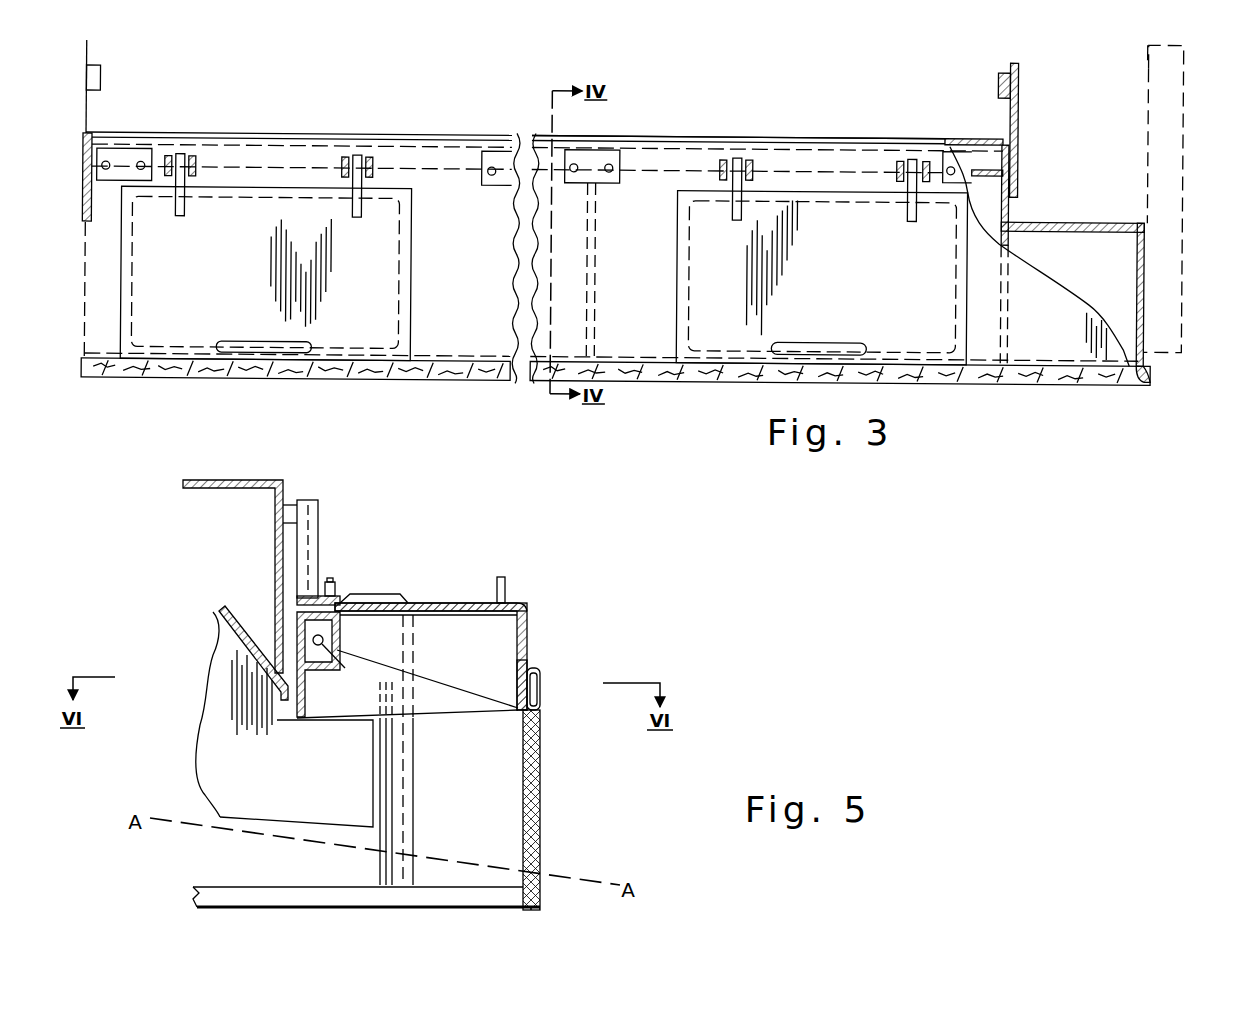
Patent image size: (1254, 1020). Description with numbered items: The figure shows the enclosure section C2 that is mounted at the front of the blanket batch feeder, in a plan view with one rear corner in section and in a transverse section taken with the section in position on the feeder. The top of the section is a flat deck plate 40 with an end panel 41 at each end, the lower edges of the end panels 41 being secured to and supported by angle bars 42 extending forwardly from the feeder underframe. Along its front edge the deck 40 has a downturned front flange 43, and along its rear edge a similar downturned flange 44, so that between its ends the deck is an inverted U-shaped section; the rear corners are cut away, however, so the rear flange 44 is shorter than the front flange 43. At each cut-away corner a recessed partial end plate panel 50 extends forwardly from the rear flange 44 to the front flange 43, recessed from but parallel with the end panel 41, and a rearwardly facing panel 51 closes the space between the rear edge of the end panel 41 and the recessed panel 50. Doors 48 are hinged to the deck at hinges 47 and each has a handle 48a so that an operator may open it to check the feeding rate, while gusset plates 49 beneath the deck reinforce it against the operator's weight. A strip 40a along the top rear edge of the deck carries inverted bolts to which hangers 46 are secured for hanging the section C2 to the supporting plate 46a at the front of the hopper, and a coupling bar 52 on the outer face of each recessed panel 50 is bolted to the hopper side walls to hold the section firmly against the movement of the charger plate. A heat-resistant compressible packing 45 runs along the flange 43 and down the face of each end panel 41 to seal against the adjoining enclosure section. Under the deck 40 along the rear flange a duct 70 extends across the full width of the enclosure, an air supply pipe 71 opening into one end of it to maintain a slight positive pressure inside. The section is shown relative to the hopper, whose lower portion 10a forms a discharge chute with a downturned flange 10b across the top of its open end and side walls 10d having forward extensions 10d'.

In FIG. 3, the coupling bar 52 is at (88, 108).
In FIG. 3, the hinges 47 is at (342, 158).
In FIG. 3, the strip 40a is at (678, 153).
In FIG. 5, the strip 40a is at (340, 600).
In FIG. 3, the door 48 is at (355, 270).
In FIG. 5, the door 48 is at (443, 603).
In FIG. 3, the handle 48a is at (249, 338).
In FIG. 3, the recessed partial end plate panel 50 is at (1010, 206).
In FIG. 5, the recessed partial end plate panel 50 is at (465, 720).
In FIG. 3, the rearwardly facing panel 51 is at (1095, 214).
In FIG. 5, the rearwardly facing panel 51 is at (412, 835).
In FIG. 3, the angle bar 42 is at (1185, 149).
In FIG. 5, the angle bar 42 is at (423, 893).
In FIG. 3, the end panel 41 is at (1146, 297).
In FIG. 5, the end panel 41 is at (495, 827).
In FIG. 5, the supporting plate 46a is at (275, 540).
In FIG. 5, the hanger 46 is at (310, 540).
In FIG. 5, the lower portion of hopper 10a is at (205, 646).
In FIG. 5, the downturned flange 10b is at (237, 628).
In FIG. 5, the side wall 10d is at (248, 761).
In FIG. 5, the forward extension 10d' is at (328, 775).
In FIG. 5, the duct 70 is at (340, 636).
In FIG. 5, the air supply pipe 71 is at (346, 663).
In FIG. 5, the downturned rear flange 44 is at (305, 698).
In FIG. 5, the gusset plate 49 is at (460, 670).
In FIG. 5, the deck plate 40 is at (487, 617).
In FIG. 5, the downturned front flange 43 is at (527, 668).
In FIG. 5, the packing 45 is at (540, 695).
In FIG. 5, the enclosure section C2 is at (455, 570).